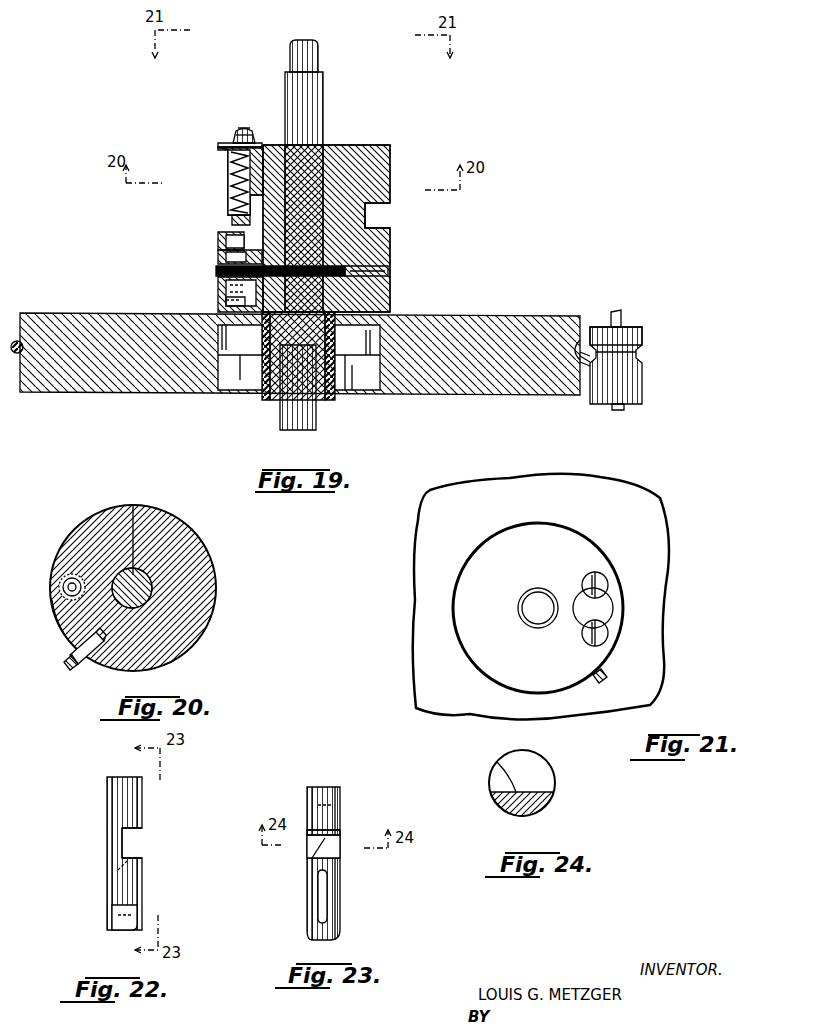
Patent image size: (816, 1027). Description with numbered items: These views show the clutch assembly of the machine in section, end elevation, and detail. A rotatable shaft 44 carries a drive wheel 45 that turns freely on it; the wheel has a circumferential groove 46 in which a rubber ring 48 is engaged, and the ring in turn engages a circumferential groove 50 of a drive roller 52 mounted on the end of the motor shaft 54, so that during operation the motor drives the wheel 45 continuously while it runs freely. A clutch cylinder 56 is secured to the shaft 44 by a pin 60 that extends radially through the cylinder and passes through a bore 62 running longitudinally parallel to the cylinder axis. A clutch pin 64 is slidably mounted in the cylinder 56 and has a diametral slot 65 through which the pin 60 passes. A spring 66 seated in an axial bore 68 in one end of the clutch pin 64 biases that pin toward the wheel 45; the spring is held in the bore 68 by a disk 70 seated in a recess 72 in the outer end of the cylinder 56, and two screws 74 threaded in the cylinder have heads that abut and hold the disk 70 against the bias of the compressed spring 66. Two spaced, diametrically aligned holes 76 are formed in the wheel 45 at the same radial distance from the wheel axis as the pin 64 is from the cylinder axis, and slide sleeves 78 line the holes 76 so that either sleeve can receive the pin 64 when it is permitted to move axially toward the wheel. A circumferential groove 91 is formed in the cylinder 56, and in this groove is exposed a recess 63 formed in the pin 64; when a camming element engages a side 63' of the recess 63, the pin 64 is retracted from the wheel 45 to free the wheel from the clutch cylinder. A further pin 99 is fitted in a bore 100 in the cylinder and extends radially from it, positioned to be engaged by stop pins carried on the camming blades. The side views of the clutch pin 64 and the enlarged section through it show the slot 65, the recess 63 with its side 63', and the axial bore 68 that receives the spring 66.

In FIG. 19, the rotatable shaft 44 is at (314, 115).
In FIG. 20, the rotatable shaft 44 is at (133, 505).
In FIG. 21, the rotatable shaft 44 is at (540, 630).
In FIG. 19, the drive wheel 45 is at (110, 360).
In FIG. 21, the drive wheel 45 is at (648, 555).
In FIG. 19, the circumferential groove 46 is at (575, 365).
In FIG. 19, the rubber ring 48 is at (572, 330).
In FIG. 19, the circumferential groove 50 is at (645, 360).
In FIG. 19, the drive roller 52 is at (636, 328).
In FIG. 19, the motor shaft 54 is at (618, 312).
In FIG. 19, the clutch cylinder 56 is at (380, 250).
In FIG. 20, the clutch cylinder 56 is at (92, 525).
In FIG. 21, the clutch cylinder 56 is at (576, 545).
In FIG. 19, the pin 60 is at (215, 268).
In FIG. 19, the bore 62 is at (226, 300).
In FIG. 20, the bore 62 is at (72, 575).
In FIG. 19, the recess 63 is at (219, 253).
In FIG. 22, the recess 63 is at (100, 853).
In FIG. 23, the recess 63 is at (357, 863).
In FIG. 24, the recess 63 is at (489, 768).
In FIG. 19, the side of recess 63' is at (201, 239).
In FIG. 22, the side of recess 63' is at (150, 834).
In FIG. 23, the side of recess 63' is at (301, 856).
In FIG. 24, the side of recess 63' is at (541, 783).
In FIG. 19, the clutch pin 64 is at (231, 220).
In FIG. 20, the clutch pin 64 is at (62, 616).
In FIG. 22, the clutch pin 64 is at (110, 892).
In FIG. 23, the clutch pin 64 is at (340, 824).
In FIG. 24, the clutch pin 64 is at (525, 816).
In FIG. 19, the diametral slot 65 is at (226, 284).
In FIG. 22, the diametral slot 65 is at (108, 874).
In FIG. 23, the diametral slot 65 is at (326, 902).
In FIG. 19, the spring 66 is at (218, 165).
In FIG. 20, the spring 66 is at (68, 590).
In FIG. 19, the axial bore 68 is at (230, 209).
In FIG. 20, the axial bore 68 is at (63, 582).
In FIG. 23, the axial bore 68 is at (333, 785).
In FIG. 19, the disk 70 is at (234, 140).
In FIG. 21, the disk 70 is at (610, 607).
In FIG. 19, the recess 72 is at (218, 145).
In FIG. 21, the recess 72 is at (612, 615).
In FIG. 19, the screws 74 is at (248, 130).
In FIG. 21, the screws 74 is at (606, 638).
In FIG. 19, the holes 76 is at (240, 385).
In FIG. 19, the slide sleeves 78 is at (360, 380).
In FIG. 19, the circumferential groove 91 is at (392, 223).
In FIG. 20, the pin 99 is at (70, 668).
In FIG. 21, the pin 99 is at (596, 685).
In FIG. 20, the bore 100 is at (85, 640).